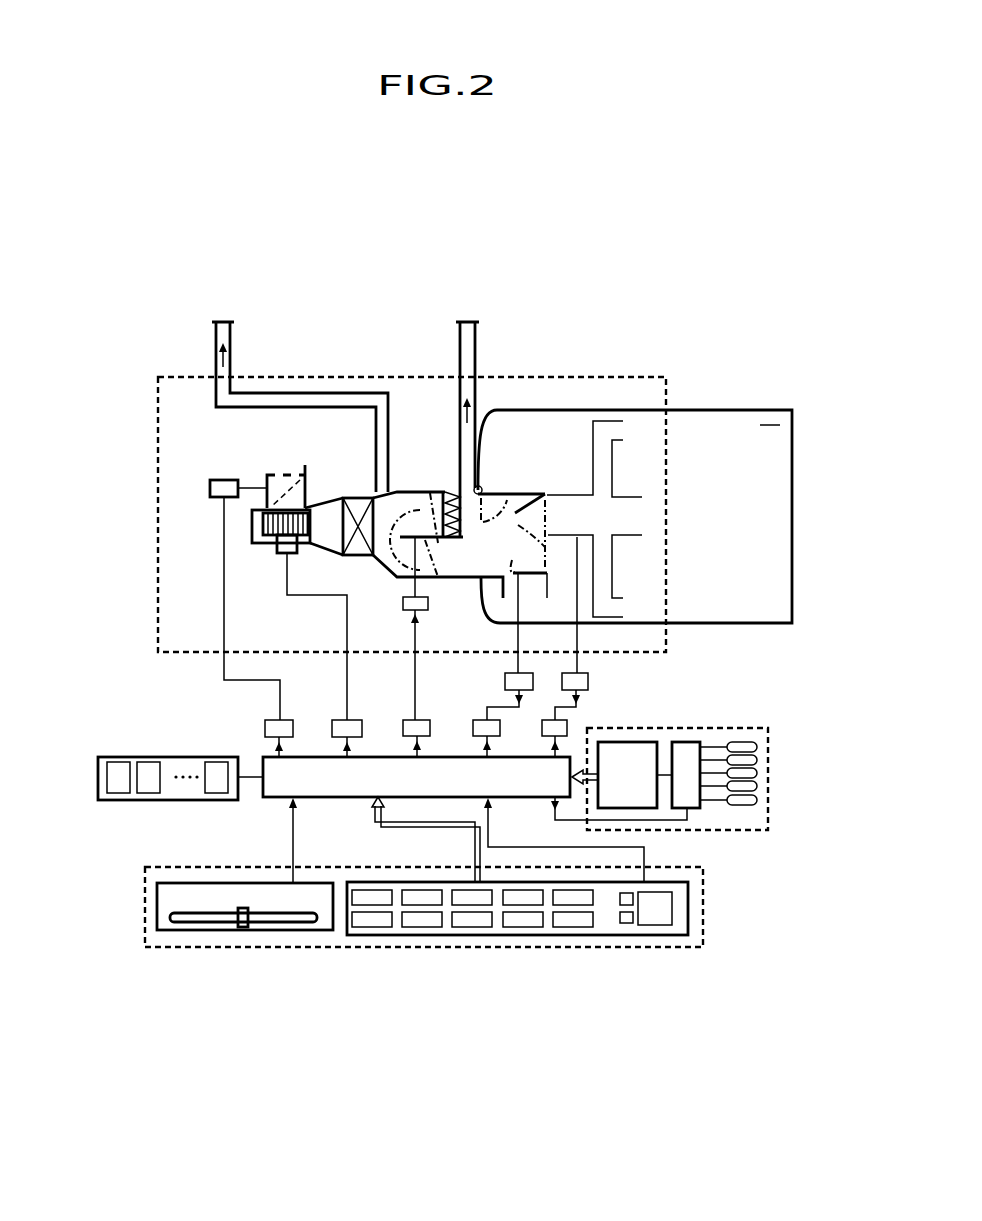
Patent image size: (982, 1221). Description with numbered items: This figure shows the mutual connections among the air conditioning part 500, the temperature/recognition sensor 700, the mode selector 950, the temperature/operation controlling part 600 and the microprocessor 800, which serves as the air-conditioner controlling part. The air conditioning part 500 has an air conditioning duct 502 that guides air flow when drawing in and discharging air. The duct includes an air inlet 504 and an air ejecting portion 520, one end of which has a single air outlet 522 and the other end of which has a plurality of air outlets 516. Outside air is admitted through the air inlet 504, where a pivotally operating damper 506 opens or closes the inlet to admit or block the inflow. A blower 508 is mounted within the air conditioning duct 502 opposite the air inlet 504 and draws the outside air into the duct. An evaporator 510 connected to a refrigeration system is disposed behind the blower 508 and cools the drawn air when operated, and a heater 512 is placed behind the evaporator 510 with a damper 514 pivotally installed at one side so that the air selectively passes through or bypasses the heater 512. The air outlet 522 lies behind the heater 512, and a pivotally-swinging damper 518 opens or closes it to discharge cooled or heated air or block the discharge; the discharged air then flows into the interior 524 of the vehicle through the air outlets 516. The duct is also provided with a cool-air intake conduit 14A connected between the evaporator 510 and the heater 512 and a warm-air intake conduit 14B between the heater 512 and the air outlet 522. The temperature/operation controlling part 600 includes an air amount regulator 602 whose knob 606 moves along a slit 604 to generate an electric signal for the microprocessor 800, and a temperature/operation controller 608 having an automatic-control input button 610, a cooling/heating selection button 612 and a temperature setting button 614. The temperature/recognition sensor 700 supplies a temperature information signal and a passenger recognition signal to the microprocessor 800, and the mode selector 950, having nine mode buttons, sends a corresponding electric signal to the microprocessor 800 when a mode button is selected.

The cool-air intake conduit 14A is at (222, 322).
The warm-air intake conduit 14B is at (465, 322).
The air conditioning part 500 is at (157, 430).
The air conditioning duct 502 is at (335, 542).
The air inlet 504 is at (292, 488).
The damper 506 is at (287, 477).
The blower 508 is at (263, 521).
The evaporator 510 is at (362, 555).
The heater 512 is at (443, 490).
The damper 514 is at (428, 545).
The air outlets 516 is at (610, 432).
The damper 518 is at (533, 492).
The air ejecting portion 520 is at (636, 460).
The air outlet 522 is at (567, 510).
The interior of the vehicle 524 is at (755, 422).
The temperature/operation controlling part 600 is at (145, 897).
The air amount regulator 602 is at (165, 903).
The slit 604 is at (288, 922).
The knob 606 is at (243, 930).
The temperature/operation controller 608 is at (703, 908).
The automatic-control input button 610 is at (345, 933).
The cooling/heating selection button 612 is at (445, 917).
The temperature setting button 614 is at (613, 915).
The temperature/recognition sensor 700 is at (768, 742).
The microprocessor 800 is at (263, 760).
The mode selector 950 is at (133, 757).